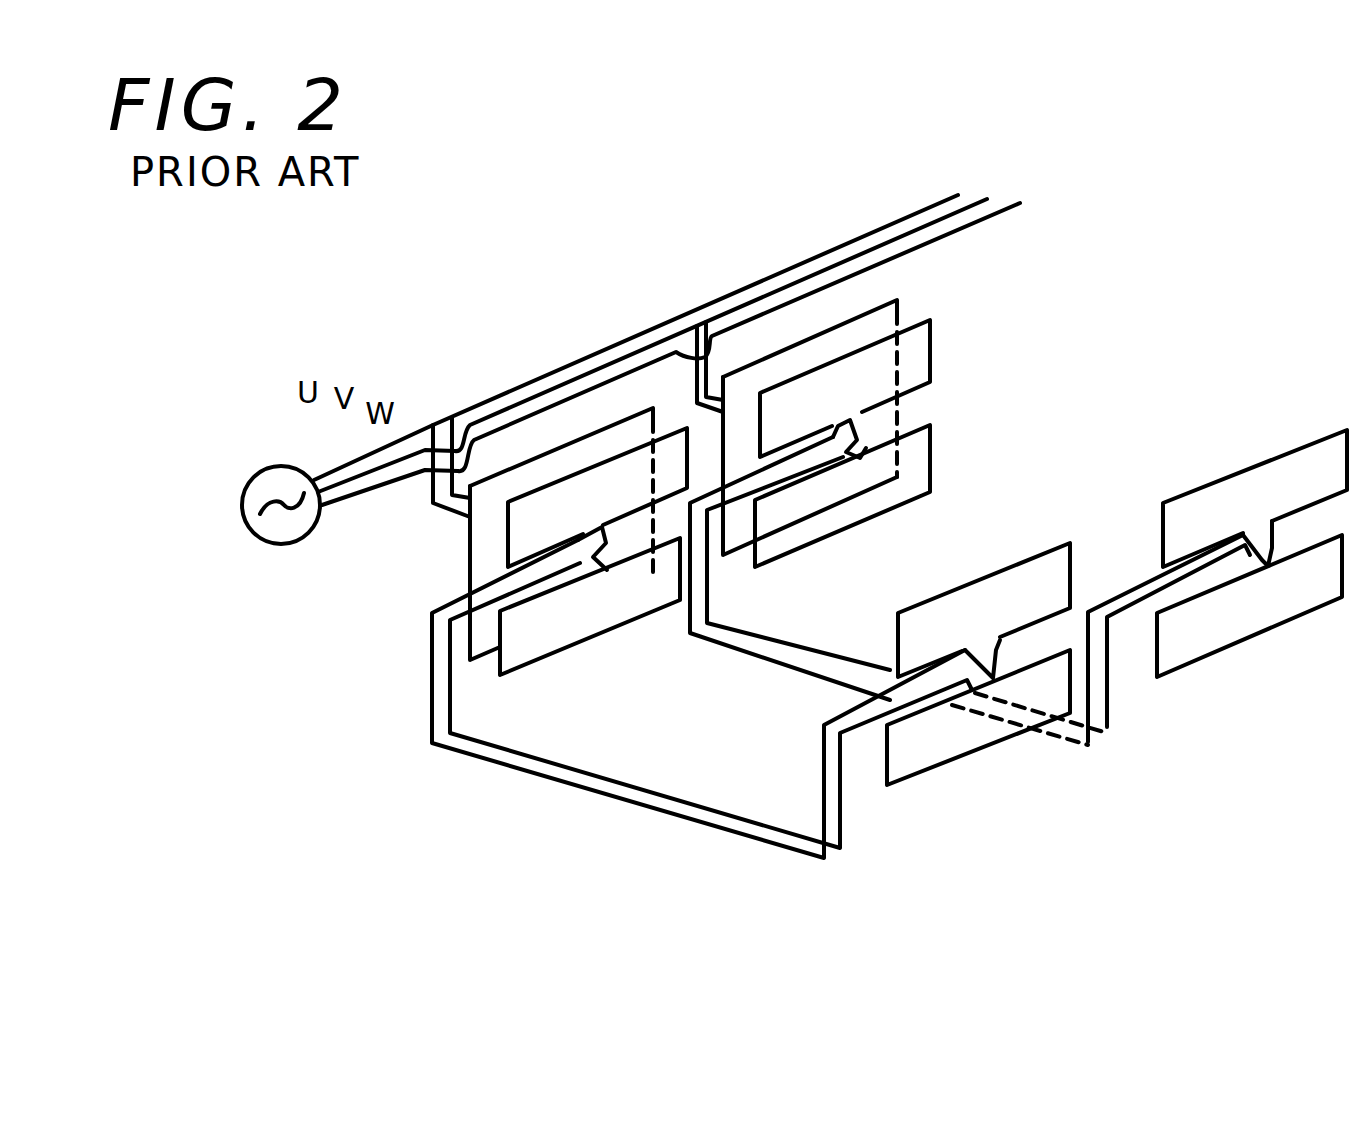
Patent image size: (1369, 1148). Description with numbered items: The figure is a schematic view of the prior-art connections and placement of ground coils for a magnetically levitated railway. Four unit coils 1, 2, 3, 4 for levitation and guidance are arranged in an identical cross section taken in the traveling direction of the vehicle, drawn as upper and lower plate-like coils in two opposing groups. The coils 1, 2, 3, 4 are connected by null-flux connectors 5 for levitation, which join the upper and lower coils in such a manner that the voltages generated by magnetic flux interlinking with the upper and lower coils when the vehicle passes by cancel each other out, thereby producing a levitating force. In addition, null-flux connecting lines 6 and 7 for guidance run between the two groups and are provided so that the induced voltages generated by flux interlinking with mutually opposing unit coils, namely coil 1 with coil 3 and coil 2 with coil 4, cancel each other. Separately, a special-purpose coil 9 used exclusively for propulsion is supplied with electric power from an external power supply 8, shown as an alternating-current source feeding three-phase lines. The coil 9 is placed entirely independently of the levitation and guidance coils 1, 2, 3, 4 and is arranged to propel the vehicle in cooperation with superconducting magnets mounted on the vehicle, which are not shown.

The unit coil 1 is at (504, 540).
The unit coil 2 is at (497, 664).
The unit coil 3 is at (1043, 605).
The unit coil 4 is at (937, 768).
The null-flux connector 5 is at (847, 428).
The null-flux connecting line 6 is at (570, 783).
The null-flux connecting line 7 is at (695, 806).
The external power supply 8 is at (269, 470).
The special-purpose coil 9 is at (588, 436).